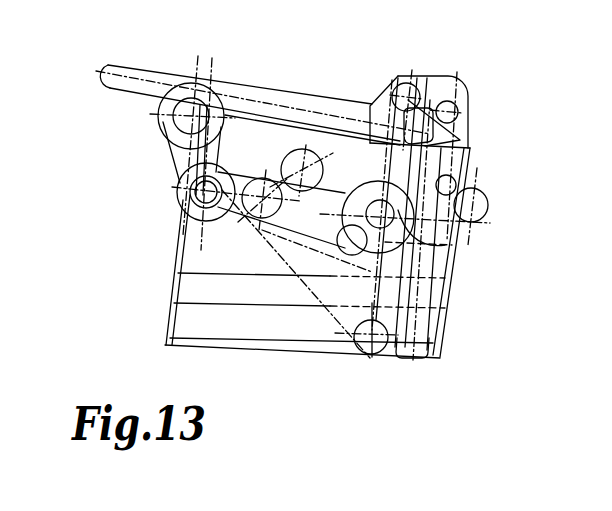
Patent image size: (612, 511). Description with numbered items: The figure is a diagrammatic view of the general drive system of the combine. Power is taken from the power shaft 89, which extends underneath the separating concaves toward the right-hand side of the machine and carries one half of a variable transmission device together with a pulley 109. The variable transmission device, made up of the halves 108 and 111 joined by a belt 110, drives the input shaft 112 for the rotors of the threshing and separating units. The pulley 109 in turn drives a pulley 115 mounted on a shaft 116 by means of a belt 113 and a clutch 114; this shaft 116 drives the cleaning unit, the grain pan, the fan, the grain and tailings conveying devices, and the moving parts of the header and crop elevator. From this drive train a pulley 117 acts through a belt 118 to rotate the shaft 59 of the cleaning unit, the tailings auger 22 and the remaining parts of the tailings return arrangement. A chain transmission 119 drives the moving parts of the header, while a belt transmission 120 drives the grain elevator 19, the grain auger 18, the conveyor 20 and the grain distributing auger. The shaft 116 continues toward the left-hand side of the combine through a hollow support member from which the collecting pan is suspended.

The conveyor 20 is at (143, 66).
The variable transmission device half 111 is at (210, 80).
The input shaft 112 is at (158, 117).
The belt 110 is at (172, 141).
The pulley 109 is at (186, 201).
The power shaft 89 is at (187, 212).
The variable transmission device half 108 is at (203, 216).
The shaft of the cleaning unit 59 is at (263, 178).
The clutch 114 is at (300, 152).
The pulley 115 is at (362, 183).
The shaft 116 is at (340, 208).
The belt 113 is at (293, 238).
The belt 118 is at (327, 315).
The tailings auger 22 is at (380, 357).
The grain auger 18 is at (418, 360).
The grain elevator 19 is at (430, 320).
The pulley 117 is at (453, 256).
The chain transmission 119 is at (463, 228).
The belt transmission 120 is at (383, 98).